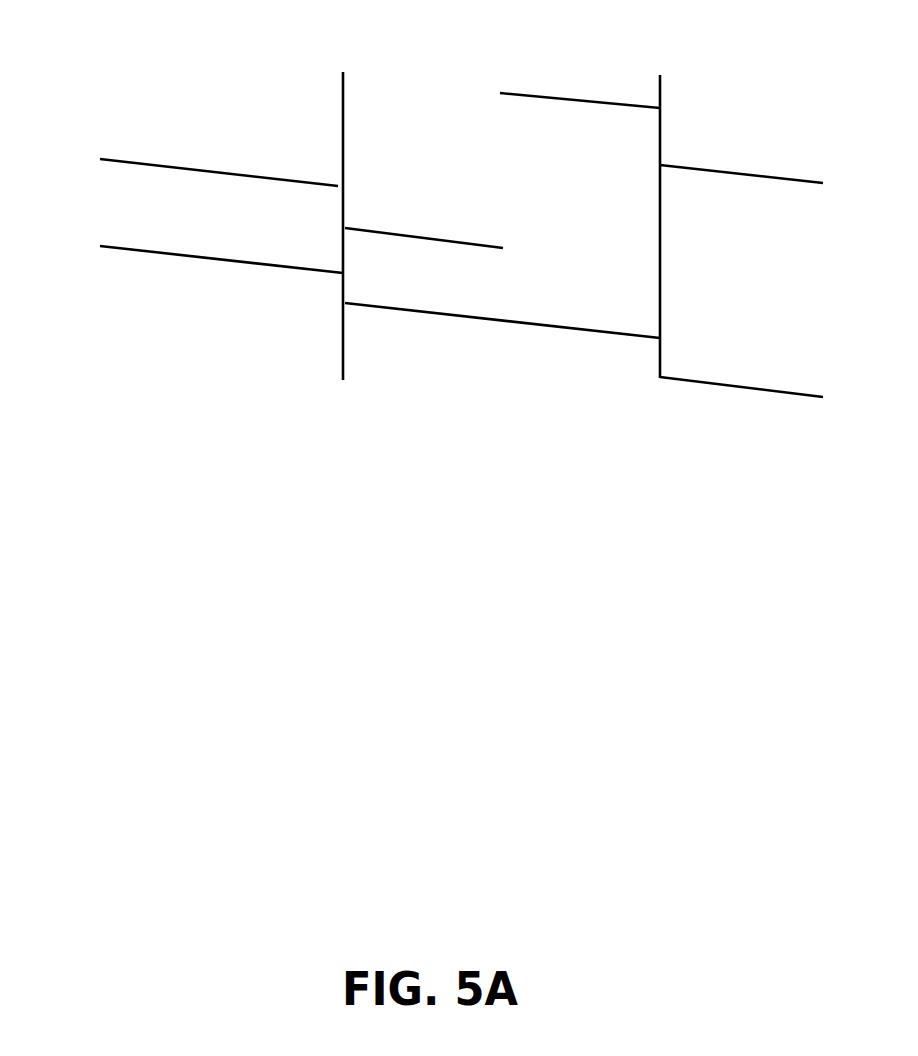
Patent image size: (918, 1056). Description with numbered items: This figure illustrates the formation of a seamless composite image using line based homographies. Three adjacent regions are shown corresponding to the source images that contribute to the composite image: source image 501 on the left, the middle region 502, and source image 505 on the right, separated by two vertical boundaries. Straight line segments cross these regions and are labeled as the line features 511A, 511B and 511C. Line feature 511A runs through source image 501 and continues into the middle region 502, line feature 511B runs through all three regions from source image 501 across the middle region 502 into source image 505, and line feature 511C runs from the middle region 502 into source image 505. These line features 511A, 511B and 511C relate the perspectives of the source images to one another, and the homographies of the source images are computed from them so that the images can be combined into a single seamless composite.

The source image 501 is at (186, 85).
The second region 502 is at (458, 82).
The source image 505 is at (723, 88).
The line feature 511A is at (150, 150).
The line feature 511B is at (150, 268).
The line feature 511C is at (571, 118).